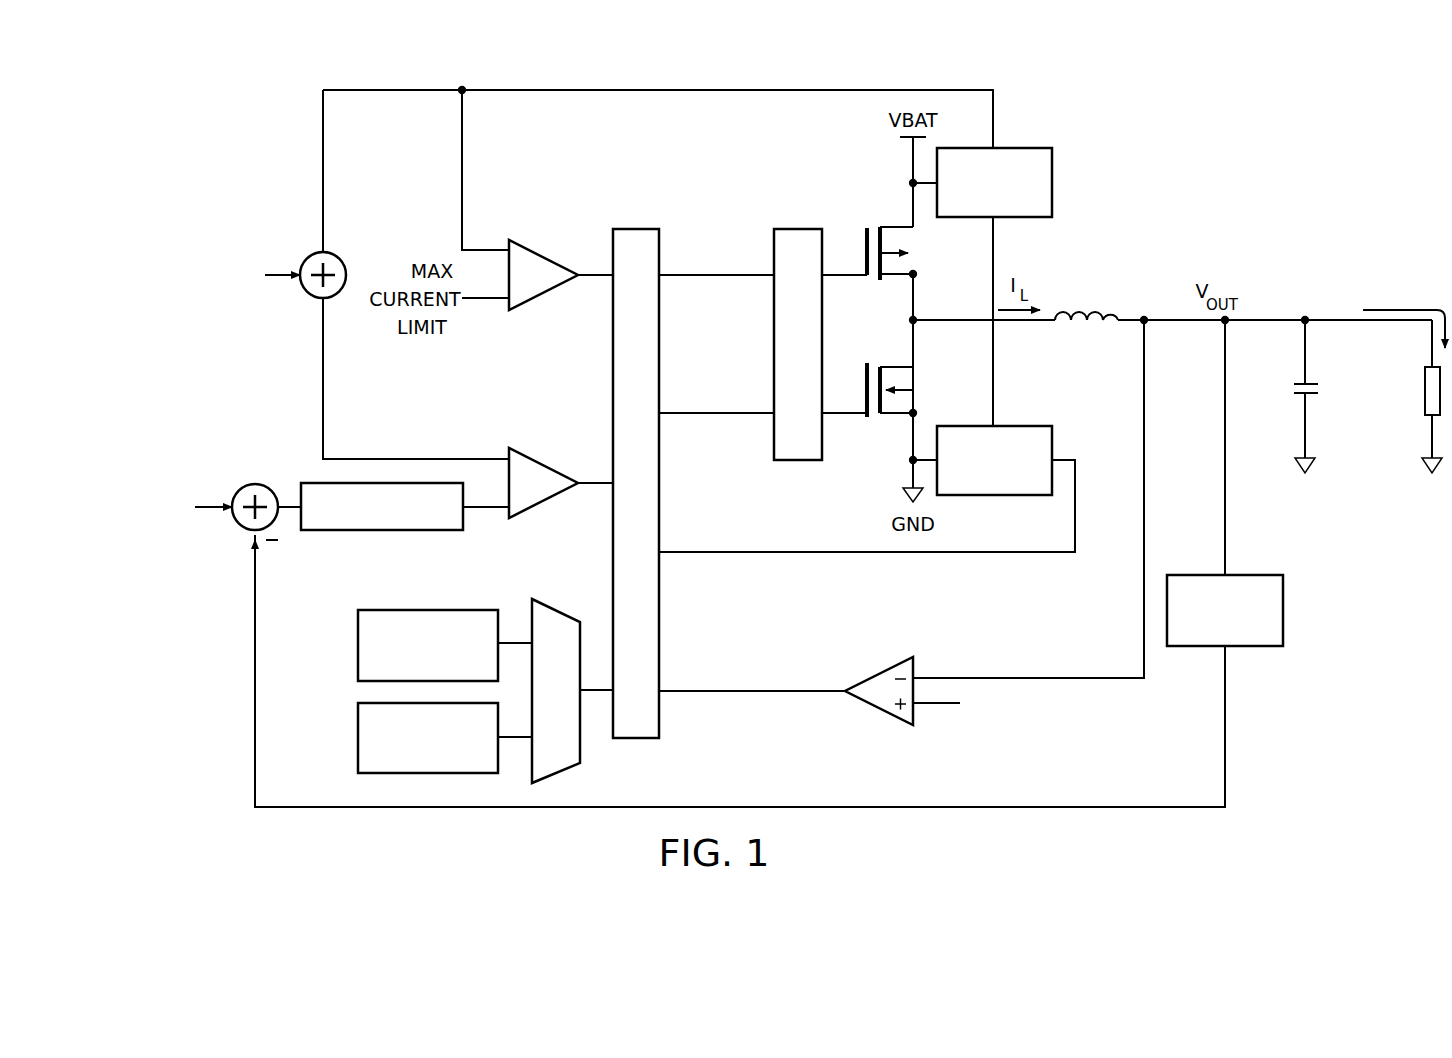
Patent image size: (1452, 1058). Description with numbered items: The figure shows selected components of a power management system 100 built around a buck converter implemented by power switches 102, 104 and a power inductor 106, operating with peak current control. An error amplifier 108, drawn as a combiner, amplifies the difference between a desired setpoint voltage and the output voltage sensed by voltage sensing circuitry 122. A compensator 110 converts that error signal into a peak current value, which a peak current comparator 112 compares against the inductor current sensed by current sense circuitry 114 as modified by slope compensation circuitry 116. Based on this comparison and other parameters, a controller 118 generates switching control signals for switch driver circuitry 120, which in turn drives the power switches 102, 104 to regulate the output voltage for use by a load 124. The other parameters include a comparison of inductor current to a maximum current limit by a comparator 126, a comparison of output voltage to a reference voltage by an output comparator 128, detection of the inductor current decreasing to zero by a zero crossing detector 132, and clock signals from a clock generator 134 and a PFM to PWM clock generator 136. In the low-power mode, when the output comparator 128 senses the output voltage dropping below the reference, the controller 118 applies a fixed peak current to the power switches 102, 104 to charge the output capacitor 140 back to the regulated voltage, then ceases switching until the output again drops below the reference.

The power management system 100 is at (1155, 175).
The power switch 102 is at (866, 240).
The power switch 104 is at (866, 378).
The power inductor 106 is at (1086, 313).
The error amplifier 108 is at (248, 486).
The compensator 110 is at (378, 531).
The peak current comparator 112 is at (548, 460).
The current sense circuitry 114 is at (1028, 147).
The slope compensation circuitry 116 is at (307, 258).
The controller 118 is at (622, 228).
The switch driver circuitry 120 is at (783, 228).
The voltage sensing circuitry 122 is at (1283, 612).
The load 124 is at (1423, 392).
The comparator 126 is at (548, 258).
The output comparator 128 is at (880, 712).
The zero crossing detector 132 is at (1052, 448).
The clock generator 134 is at (358, 658).
The PFM to PWM clock generator 136 is at (358, 751).
The output capacitor 140 is at (1322, 392).